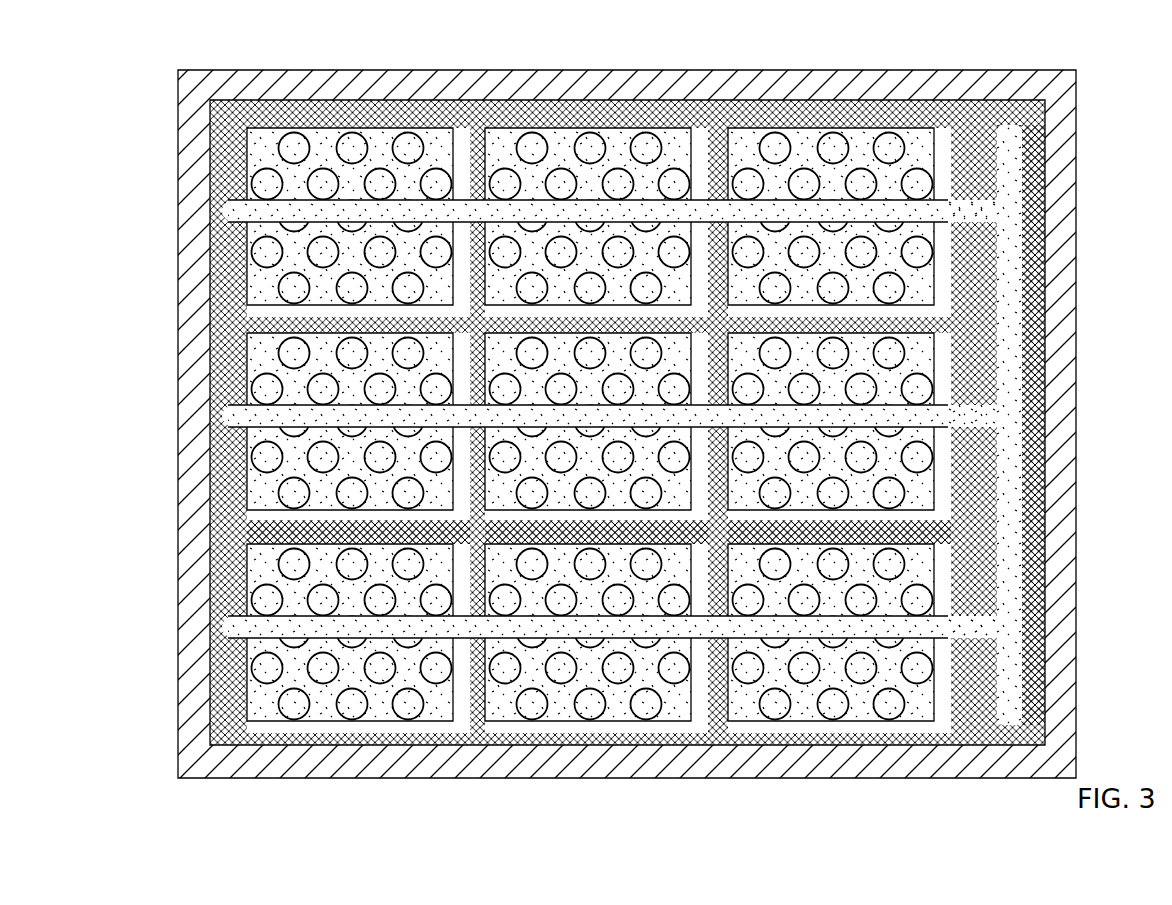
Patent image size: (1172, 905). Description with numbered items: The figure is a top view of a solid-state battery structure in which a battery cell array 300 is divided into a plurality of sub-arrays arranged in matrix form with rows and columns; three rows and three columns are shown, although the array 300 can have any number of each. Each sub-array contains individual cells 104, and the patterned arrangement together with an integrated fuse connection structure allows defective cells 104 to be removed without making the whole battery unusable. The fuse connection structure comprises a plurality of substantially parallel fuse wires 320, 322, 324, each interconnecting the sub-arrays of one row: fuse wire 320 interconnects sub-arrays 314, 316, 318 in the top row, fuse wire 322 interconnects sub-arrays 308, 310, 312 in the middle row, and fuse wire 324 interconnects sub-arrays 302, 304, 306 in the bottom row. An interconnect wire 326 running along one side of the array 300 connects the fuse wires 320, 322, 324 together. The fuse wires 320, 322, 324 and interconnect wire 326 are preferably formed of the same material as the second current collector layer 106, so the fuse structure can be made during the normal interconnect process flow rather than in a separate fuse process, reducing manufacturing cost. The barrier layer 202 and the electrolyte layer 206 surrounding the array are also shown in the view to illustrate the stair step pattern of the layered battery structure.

The battery cell array 300 is at (618, 420).
The barrier layer 202 is at (1066, 207).
The electrolyte layer 206 is at (1038, 277).
The interconnect wire 326 is at (1032, 150).
The cells 104 is at (275, 363).
The second current collector layer 106 is at (236, 640).
The sub-array 302 is at (870, 746).
The sub-array 304 is at (556, 746).
The sub-array 306 is at (347, 746).
The sub-array 308 is at (941, 529).
The sub-array 310 is at (640, 528).
The sub-array 312 is at (381, 528).
The sub-array 314 is at (838, 102).
The sub-array 316 is at (600, 102).
The sub-array 318 is at (364, 102).
The fuse wire 320 is at (975, 197).
The fuse wire 322 is at (975, 402).
The fuse wire 324 is at (975, 613).